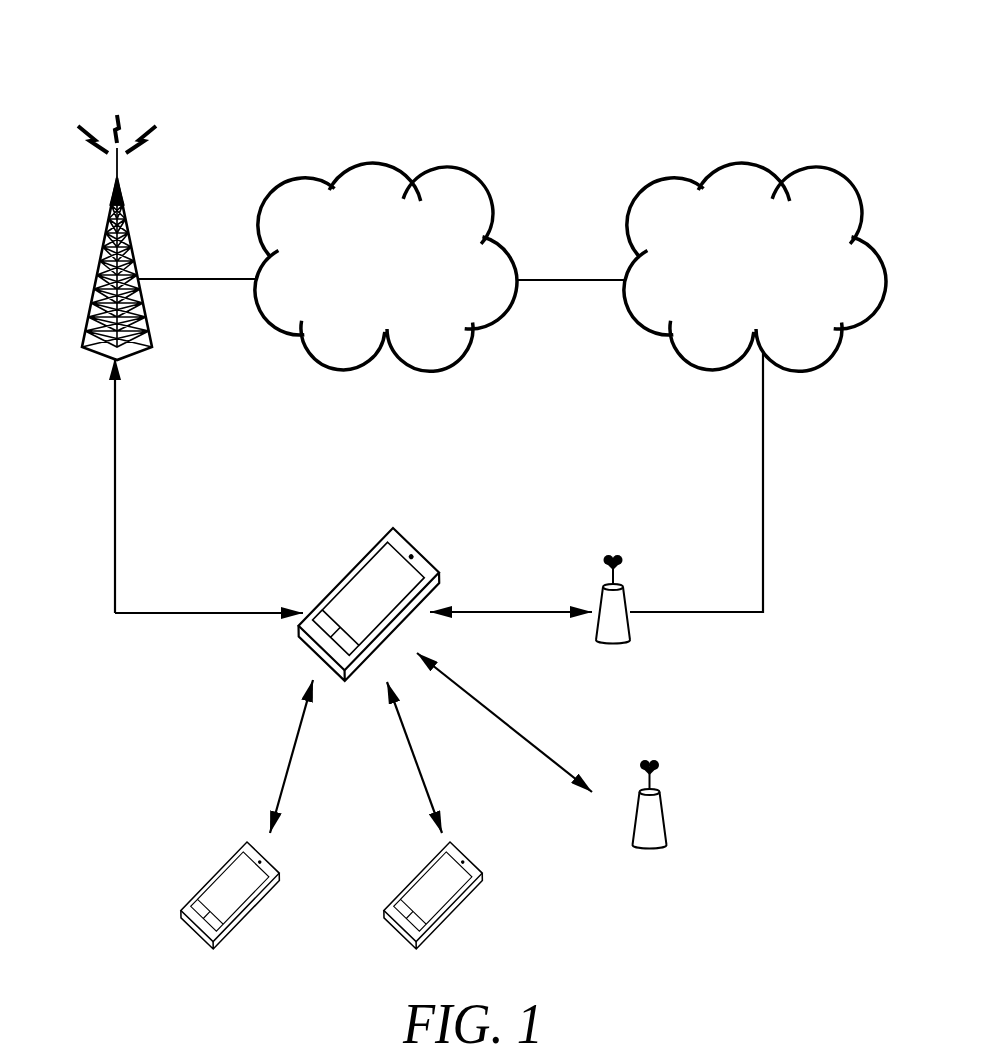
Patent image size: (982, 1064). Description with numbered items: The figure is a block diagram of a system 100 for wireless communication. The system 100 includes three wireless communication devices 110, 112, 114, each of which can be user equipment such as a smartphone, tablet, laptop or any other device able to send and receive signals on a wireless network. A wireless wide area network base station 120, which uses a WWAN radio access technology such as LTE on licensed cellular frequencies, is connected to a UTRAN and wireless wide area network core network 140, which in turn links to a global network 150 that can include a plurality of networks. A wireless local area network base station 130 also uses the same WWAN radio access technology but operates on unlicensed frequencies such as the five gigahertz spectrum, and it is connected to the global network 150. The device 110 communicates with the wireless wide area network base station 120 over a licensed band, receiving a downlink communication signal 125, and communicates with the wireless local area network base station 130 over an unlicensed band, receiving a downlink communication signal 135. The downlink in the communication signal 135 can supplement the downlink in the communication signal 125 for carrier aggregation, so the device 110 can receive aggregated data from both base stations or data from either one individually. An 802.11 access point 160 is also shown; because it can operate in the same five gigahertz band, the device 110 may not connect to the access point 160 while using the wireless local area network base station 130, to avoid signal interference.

The system 100 is at (822, 60).
The wireless communication device 110 is at (394, 527).
The wireless communication device 112 is at (272, 858).
The wireless communication device 114 is at (475, 858).
The wireless wide area network base station 120 is at (96, 280).
The communication signal 125 is at (115, 476).
The wireless local area network base station 130 is at (613, 645).
The communication signal 135 is at (506, 612).
The UTRAN and wireless wide area network core network 140 is at (377, 163).
The global network 150 is at (746, 163).
The 802.11 access point 160 is at (655, 790).